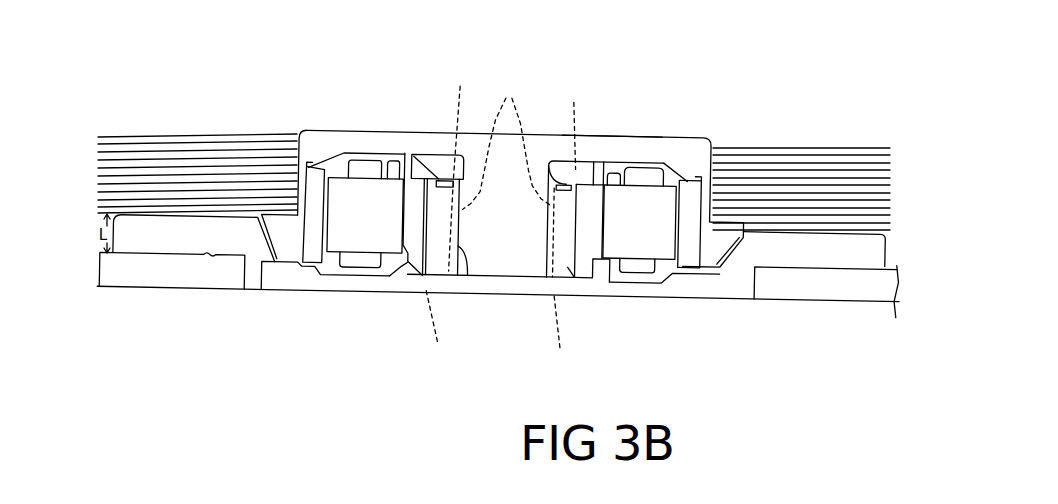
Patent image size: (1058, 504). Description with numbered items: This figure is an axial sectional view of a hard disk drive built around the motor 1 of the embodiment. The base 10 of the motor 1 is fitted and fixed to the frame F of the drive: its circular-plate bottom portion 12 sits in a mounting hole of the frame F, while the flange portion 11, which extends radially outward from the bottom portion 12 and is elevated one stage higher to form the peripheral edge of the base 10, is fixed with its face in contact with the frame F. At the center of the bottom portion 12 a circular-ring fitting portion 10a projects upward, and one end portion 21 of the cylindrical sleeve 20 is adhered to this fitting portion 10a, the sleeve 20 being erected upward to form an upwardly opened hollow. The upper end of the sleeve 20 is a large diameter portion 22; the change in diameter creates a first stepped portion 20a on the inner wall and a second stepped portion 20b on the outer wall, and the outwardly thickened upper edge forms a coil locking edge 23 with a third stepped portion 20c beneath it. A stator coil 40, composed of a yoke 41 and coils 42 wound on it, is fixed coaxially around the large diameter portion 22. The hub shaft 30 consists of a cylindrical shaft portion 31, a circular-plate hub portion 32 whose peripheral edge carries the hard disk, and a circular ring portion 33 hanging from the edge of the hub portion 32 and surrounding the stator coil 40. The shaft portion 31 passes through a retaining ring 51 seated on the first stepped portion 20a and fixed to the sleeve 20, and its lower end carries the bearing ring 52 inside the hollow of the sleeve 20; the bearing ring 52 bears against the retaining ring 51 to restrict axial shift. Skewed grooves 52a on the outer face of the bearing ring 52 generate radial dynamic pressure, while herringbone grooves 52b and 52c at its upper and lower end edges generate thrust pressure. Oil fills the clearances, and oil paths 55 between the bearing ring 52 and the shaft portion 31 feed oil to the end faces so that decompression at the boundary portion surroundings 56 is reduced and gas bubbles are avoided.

The motor 1 is at (533, 74).
The base 10 is at (207, 285).
The fitting portion 10a is at (603, 272).
The flange portion 11 is at (797, 265).
The bottom portion 12 is at (722, 294).
The sleeve 20 is at (563, 280).
The first stepped portion 20a is at (414, 152).
The second stepped portion 20b is at (393, 271).
The third stepped portion 20c is at (392, 153).
The one end portion 21 is at (577, 272).
The large diameter portion 22 is at (600, 164).
The coil locking edge 23 is at (598, 163).
The hub shaft 30 is at (469, 133).
The shaft portion 31 is at (496, 277).
The hub portion 32 is at (607, 135).
The circular ring portion 33 is at (263, 266).
The stator coil 40 is at (328, 265).
The yoke 41 is at (666, 186).
The coils 42 is at (351, 281).
The retaining ring 51 is at (433, 157).
The bearing ring 52 is at (475, 272).
The grooves 52a is at (553, 160).
The herringbone grooves 52b is at (426, 278).
The herringbone grooves 52c is at (440, 275).
The oil paths 55 is at (508, 143).
The boundary portion surroundings 56 is at (503, 217).
The frame F is at (125, 291).